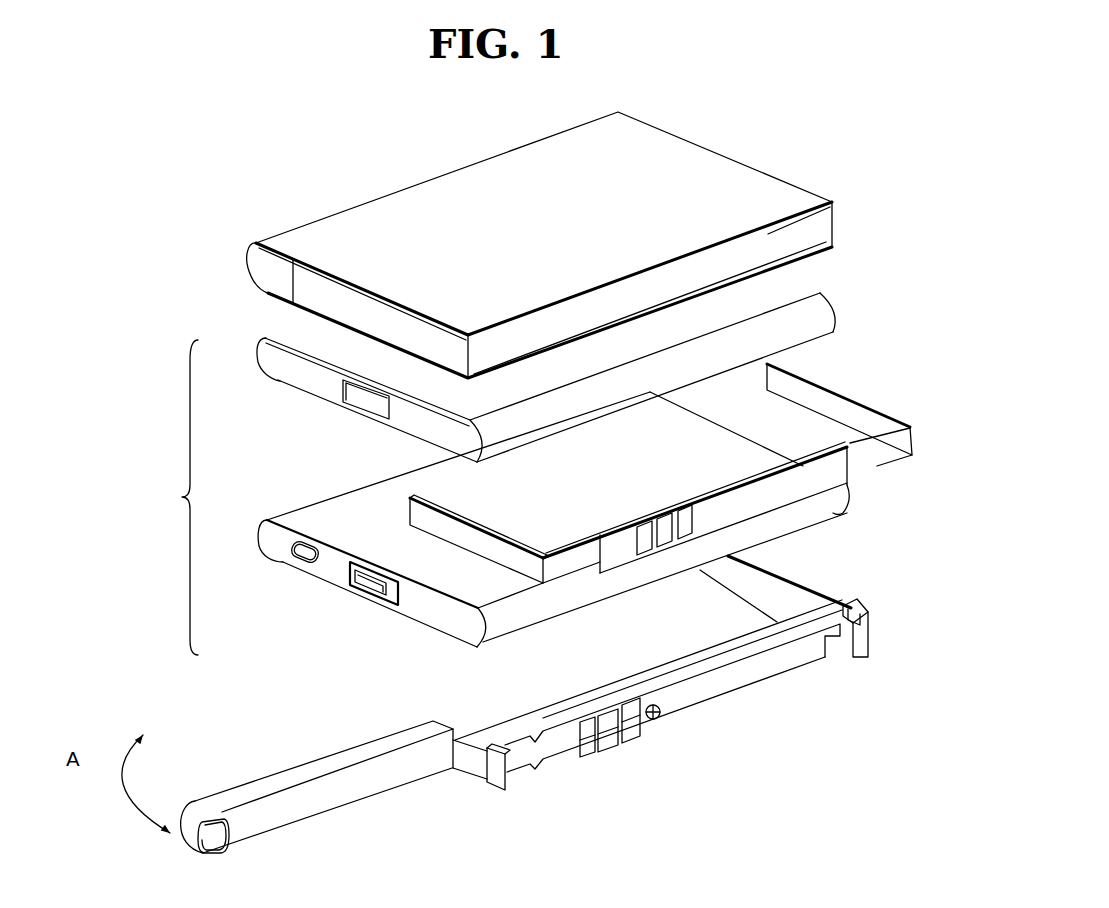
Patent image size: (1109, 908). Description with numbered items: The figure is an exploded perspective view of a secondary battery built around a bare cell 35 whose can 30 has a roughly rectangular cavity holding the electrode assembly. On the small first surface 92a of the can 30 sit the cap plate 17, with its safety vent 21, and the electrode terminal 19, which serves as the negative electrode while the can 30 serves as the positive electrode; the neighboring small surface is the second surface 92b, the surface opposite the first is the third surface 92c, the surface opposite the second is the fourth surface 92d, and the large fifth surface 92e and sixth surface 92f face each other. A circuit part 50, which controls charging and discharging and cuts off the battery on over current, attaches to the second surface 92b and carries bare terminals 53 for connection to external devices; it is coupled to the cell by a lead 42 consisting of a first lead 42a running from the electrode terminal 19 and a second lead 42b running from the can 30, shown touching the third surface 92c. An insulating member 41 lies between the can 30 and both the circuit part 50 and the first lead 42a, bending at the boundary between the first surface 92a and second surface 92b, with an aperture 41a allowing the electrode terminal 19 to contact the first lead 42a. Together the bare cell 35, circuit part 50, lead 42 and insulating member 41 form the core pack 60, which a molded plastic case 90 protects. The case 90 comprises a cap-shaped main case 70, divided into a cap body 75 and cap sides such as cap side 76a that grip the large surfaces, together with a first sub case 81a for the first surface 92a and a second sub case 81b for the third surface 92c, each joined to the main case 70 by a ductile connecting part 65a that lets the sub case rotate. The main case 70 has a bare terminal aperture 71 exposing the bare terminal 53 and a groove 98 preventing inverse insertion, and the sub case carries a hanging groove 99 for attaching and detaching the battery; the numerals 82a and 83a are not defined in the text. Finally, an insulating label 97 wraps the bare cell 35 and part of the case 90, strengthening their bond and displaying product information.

The label 97 is at (727, 162).
The insulating member 41 is at (822, 313).
The aperture 41a is at (346, 394).
The can 30 is at (527, 528).
The first surface 92a is at (438, 620).
The second surface 92b is at (539, 616).
The third surface 92c is at (726, 420).
The fourth surface 92d is at (358, 472).
The fifth surface 92e is at (323, 507).
The sixth surface 92f is at (320, 592).
The cap plate 17 is at (265, 538).
The safety vent 21 is at (296, 556).
The electrode terminal 19 is at (380, 590).
The bare cell 35 is at (353, 571).
The circuit part 50 is at (702, 534).
The bare terminal 53 is at (645, 552).
The lead 42 is at (661, 473).
The first lead 42a is at (513, 557).
The second lead 42b is at (842, 410).
The core pack 60 is at (175, 497).
The main case 70 is at (690, 697).
The connecting part 65a is at (447, 763).
The groove 98 is at (521, 774).
The bare terminal aperture 71 is at (617, 748).
The cap side 76a is at (720, 647).
The cap body 75 is at (788, 674).
The second sub case 81b is at (883, 603).
The case 90 is at (284, 811).
The hanging groove 99 is at (215, 838).
The first sub case 81a is at (316, 830).
The second surface of pen 82a is at (375, 786).
The third surface of pen 83a is at (318, 771).